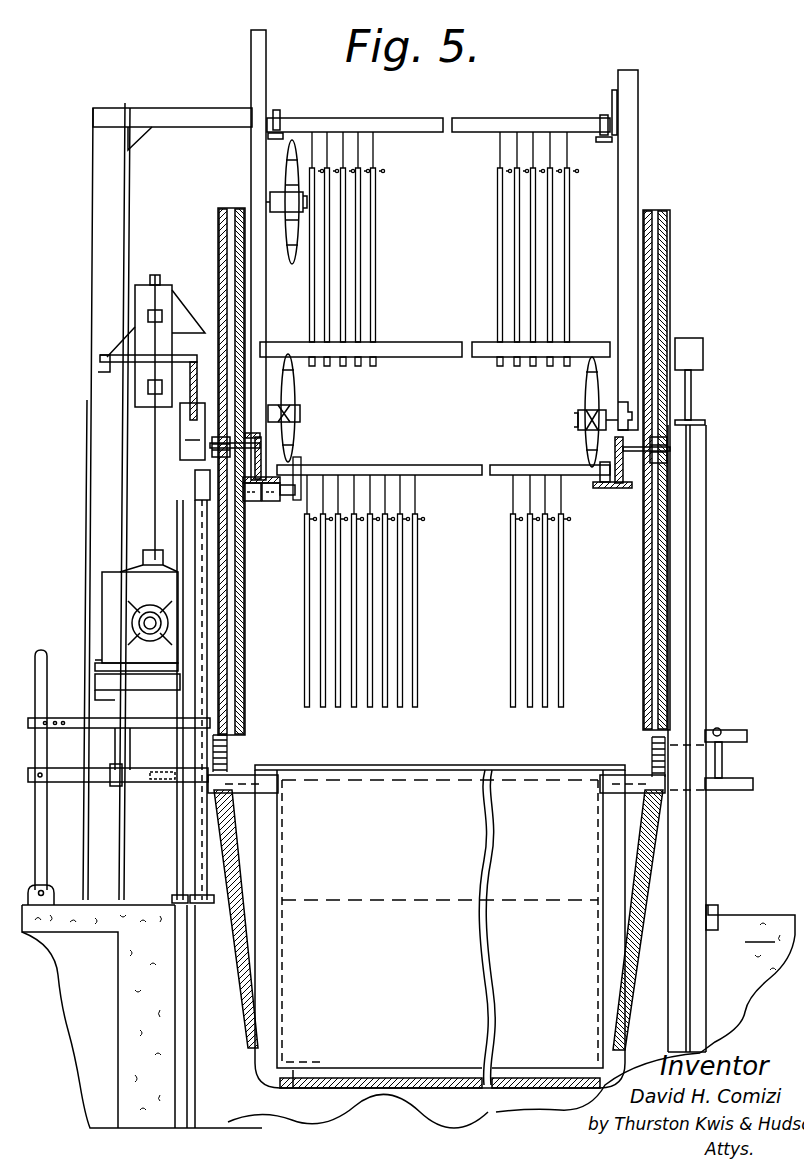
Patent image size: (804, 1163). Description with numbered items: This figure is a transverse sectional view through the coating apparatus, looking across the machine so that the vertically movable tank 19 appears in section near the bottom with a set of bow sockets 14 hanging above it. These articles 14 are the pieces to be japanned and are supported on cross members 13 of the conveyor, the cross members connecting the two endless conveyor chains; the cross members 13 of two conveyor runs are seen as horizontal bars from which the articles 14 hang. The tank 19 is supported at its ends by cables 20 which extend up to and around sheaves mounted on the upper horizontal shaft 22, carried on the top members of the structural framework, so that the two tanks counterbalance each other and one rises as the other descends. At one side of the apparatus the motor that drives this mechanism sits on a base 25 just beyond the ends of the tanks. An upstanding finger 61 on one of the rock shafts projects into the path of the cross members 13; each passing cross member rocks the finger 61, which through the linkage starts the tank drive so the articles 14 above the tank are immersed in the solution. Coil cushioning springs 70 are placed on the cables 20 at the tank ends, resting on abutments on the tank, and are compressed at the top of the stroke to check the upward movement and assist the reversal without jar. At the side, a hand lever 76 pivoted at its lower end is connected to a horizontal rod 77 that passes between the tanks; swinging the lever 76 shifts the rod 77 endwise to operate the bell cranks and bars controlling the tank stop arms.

The cross members 13 is at (456, 477).
The bow sockets 14 is at (500, 615).
The tank 19 is at (440, 926).
The cables 20 is at (244, 618).
The upper horizontal shaft 22 is at (424, 345).
The base 25 is at (156, 668).
The upstanding finger 61 is at (300, 458).
The coil cushioning springs 70 is at (228, 760).
The hand lever 76 is at (43, 832).
The horizontal rod 77 is at (77, 772).